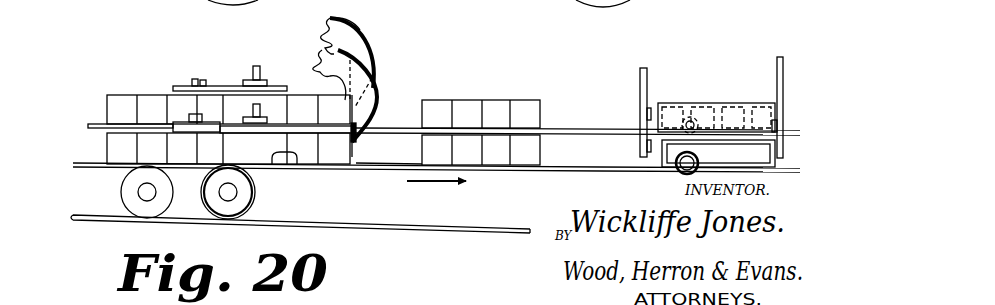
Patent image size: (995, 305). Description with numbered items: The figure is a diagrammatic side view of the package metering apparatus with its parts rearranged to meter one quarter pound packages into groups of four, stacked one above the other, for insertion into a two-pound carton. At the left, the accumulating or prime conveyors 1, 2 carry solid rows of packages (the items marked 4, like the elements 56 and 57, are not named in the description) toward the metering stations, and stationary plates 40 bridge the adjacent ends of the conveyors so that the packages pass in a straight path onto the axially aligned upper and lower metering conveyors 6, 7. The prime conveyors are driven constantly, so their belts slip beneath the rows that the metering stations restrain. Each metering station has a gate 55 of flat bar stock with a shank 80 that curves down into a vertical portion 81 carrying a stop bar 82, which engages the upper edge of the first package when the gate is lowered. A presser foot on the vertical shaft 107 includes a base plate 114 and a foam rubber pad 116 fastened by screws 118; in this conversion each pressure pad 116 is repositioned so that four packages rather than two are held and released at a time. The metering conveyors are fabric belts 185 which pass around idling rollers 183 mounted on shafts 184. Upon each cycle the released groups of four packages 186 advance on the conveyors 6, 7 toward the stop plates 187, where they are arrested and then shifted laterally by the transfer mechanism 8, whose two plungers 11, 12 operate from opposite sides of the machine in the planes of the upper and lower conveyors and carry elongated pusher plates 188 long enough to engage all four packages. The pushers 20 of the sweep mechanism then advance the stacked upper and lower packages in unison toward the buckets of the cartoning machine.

The accumulating conveyor 1 is at (88, 127).
The accumulating conveyor 2 is at (77, 167).
The cartons 4 is at (109, 101).
The upper metering conveyor 6 is at (592, 127).
The lower metering conveyor 7 is at (596, 166).
The transfer mechanism 8 is at (661, 158).
The plunger 11 is at (757, 107).
The plunger 12 is at (737, 140).
The pushers 20 is at (637, 70).
The stationary plates 40 is at (188, 168).
The gate 55 is at (366, 33).
The stop block 56 is at (209, 87).
The guide loop 57 is at (296, 165).
The shank 80 is at (329, 18).
The vertical portion 81 is at (366, 107).
The stop bar 82 is at (356, 137).
The vertical shaft 107 is at (262, 74).
The base plate 114 is at (231, 120).
The pressure pad 116 is at (175, 90).
The screws 118 is at (185, 82).
The idling rollers 183 is at (246, 199).
The shafts 184 is at (228, 195).
The conveyor belts 185 is at (370, 170).
The groups of four packages 186 is at (490, 150).
The stop plates 187 is at (800, 72).
The elongated pusher plates 188 is at (712, 153).